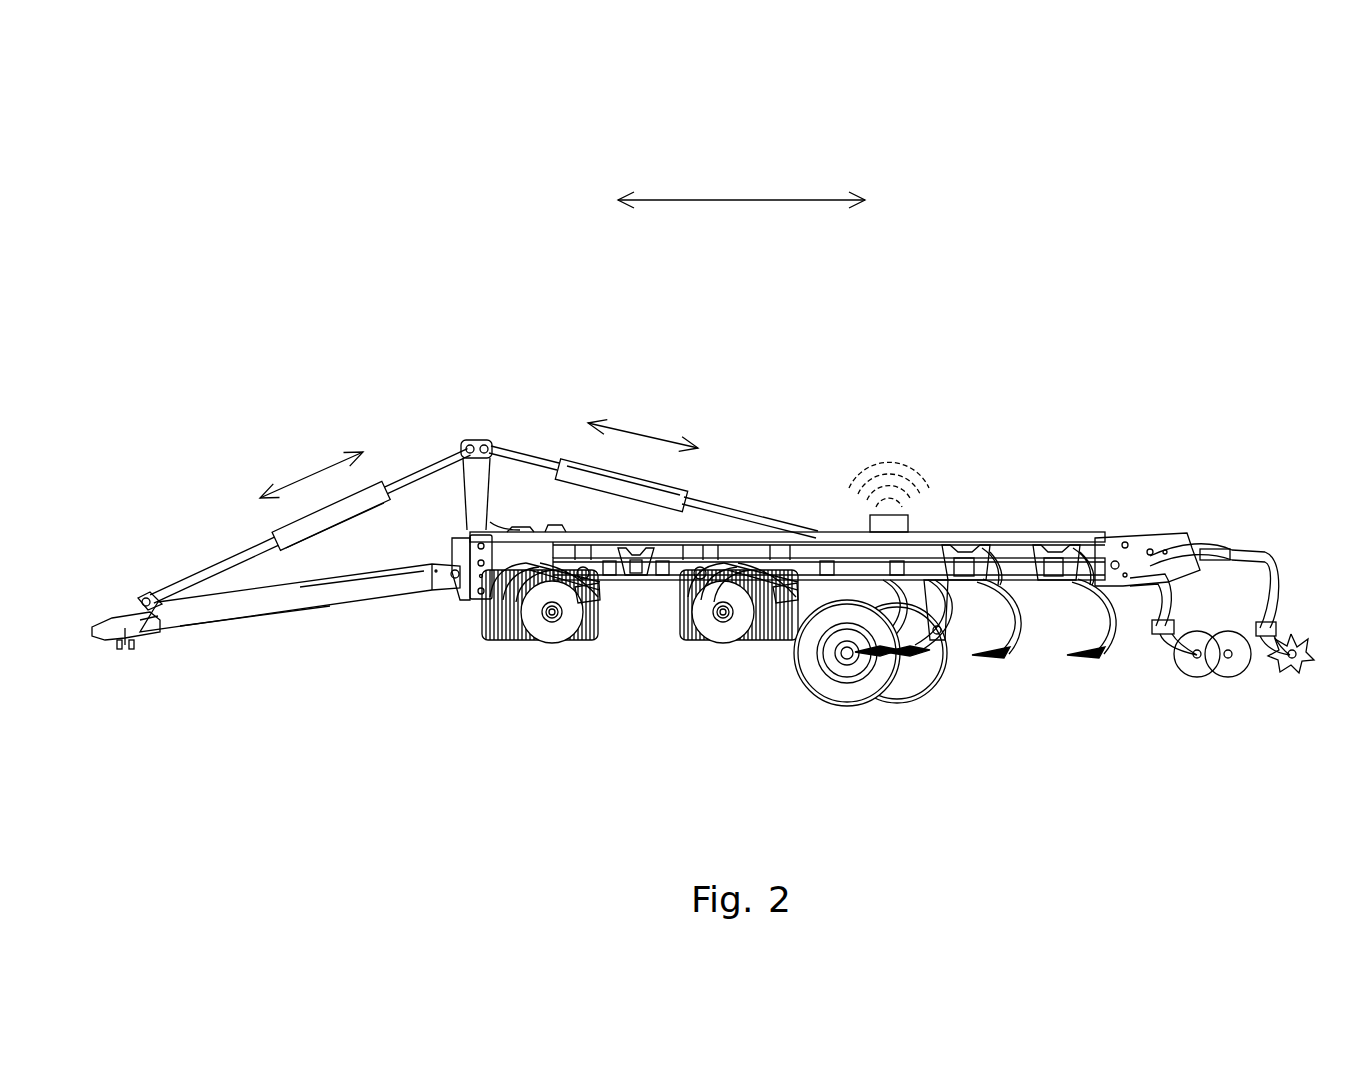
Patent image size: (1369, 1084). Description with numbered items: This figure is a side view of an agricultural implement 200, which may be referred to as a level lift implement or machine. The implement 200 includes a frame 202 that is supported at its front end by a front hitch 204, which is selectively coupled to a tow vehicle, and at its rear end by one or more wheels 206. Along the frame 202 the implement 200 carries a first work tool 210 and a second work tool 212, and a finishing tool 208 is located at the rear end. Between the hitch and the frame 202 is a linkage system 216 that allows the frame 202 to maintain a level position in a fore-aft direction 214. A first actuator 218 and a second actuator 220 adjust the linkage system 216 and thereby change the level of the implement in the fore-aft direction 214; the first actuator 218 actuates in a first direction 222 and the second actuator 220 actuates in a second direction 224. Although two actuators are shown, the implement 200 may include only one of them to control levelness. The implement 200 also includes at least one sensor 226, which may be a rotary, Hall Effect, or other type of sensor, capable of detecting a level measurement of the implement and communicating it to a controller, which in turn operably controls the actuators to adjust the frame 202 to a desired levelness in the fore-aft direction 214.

The agricultural implement 200 is at (414, 200).
The frame 202 is at (1017, 547).
The front hitch 204 is at (120, 658).
The wheels 206 is at (847, 692).
The finishing tool 208 is at (1290, 677).
The first work tool 210 is at (722, 645).
The second work tool 212 is at (1100, 655).
The fore-aft direction 214 is at (745, 200).
The linkage system 216 is at (472, 424).
The first actuator 218 is at (300, 533).
The second actuator 220 is at (575, 463).
The first direction 222 is at (308, 470).
The second direction 224 is at (645, 433).
The sensor 226 is at (867, 522).